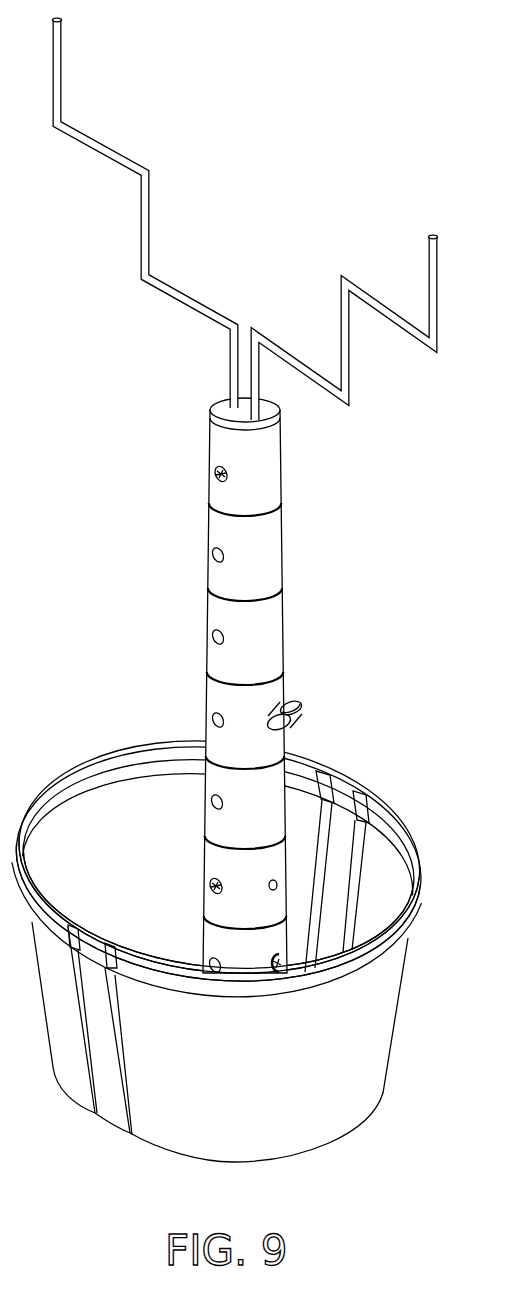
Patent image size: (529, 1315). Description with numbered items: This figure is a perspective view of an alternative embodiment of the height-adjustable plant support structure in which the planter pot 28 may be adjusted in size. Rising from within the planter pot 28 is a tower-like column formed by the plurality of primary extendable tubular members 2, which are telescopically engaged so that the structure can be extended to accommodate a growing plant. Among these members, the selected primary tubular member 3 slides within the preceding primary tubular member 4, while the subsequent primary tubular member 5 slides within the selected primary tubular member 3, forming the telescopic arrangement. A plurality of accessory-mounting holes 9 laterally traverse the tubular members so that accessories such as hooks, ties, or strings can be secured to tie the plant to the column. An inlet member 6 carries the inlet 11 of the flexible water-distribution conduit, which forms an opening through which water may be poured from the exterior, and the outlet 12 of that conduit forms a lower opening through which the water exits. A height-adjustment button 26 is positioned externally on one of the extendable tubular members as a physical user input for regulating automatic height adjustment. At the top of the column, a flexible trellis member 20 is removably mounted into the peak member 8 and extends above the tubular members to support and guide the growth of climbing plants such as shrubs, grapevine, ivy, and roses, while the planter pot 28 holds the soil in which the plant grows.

The primary extendable tubular members 2 is at (124, 747).
The selected primary tubular member 3 is at (210, 696).
The preceding primary tubular member 4 is at (210, 605).
The subsequent primary tubular member 5 is at (211, 531).
The inlet member 6 is at (277, 736).
The peak member 8 is at (270, 453).
The accessory-mounting holes 9 is at (214, 470).
The inlet 11 is at (292, 707).
The outlet 12 is at (283, 963).
The flexible trellis member 20 is at (436, 258).
The height-adjustment button 26 is at (278, 885).
The planter pot 28 is at (385, 1012).